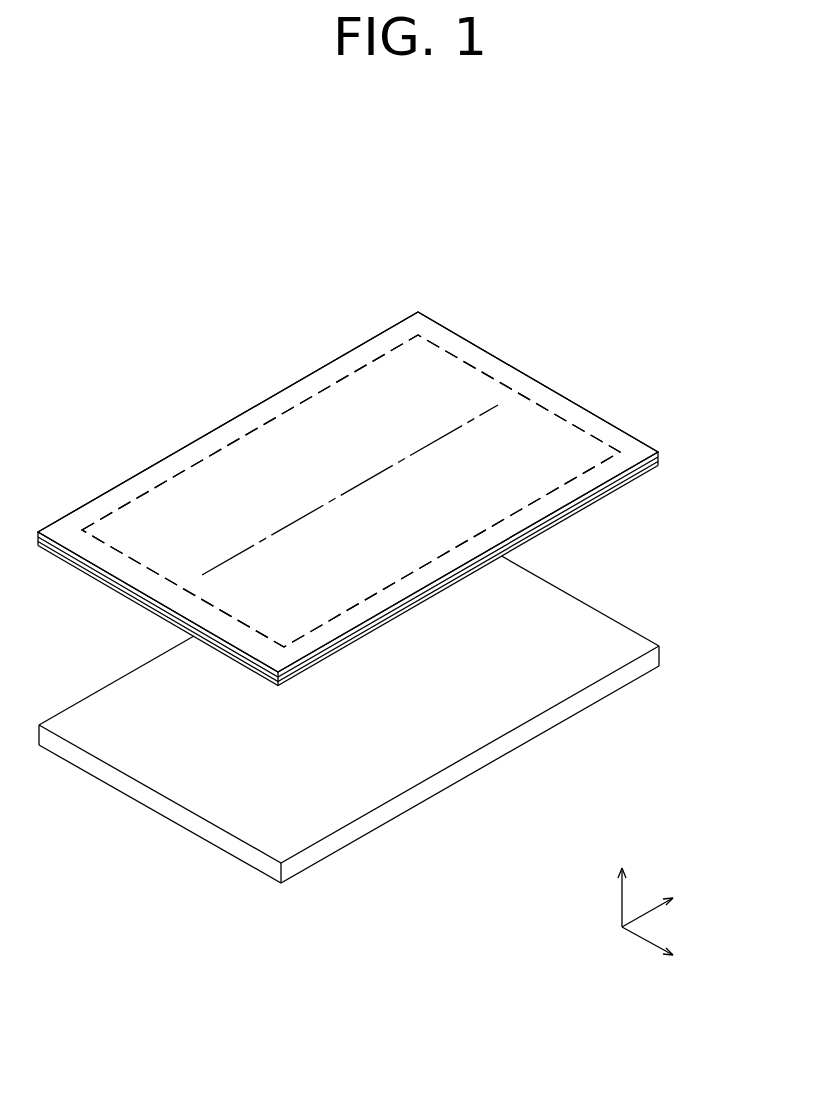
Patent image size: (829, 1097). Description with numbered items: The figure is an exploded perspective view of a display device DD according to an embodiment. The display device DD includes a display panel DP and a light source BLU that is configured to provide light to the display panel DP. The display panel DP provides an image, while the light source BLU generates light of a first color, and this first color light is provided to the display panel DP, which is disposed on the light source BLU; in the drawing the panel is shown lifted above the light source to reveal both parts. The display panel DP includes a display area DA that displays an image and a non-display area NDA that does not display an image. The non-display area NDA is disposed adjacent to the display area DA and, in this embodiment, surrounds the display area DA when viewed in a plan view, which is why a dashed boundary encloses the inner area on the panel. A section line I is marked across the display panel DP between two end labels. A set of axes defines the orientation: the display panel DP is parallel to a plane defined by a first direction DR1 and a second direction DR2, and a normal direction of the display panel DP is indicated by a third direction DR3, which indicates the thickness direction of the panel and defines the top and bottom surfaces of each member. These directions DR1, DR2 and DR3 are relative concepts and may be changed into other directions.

The display device DD is at (598, 248).
The display panel DP is at (663, 454).
The non-display area NDA is at (333, 372).
The display area DA is at (287, 435).
The section line I-I' I is at (349, 493).
The light source BLU is at (663, 653).
The first direction DR1 is at (672, 952).
The second direction DR2 is at (672, 904).
The third direction DR3 is at (620, 885).